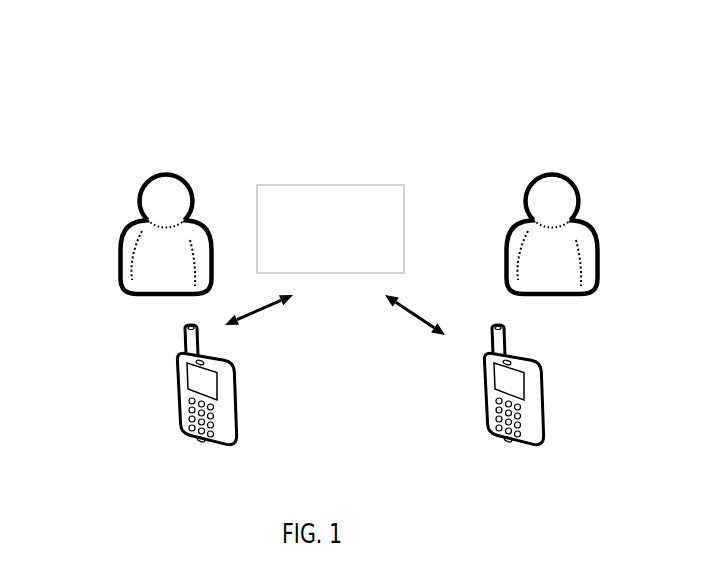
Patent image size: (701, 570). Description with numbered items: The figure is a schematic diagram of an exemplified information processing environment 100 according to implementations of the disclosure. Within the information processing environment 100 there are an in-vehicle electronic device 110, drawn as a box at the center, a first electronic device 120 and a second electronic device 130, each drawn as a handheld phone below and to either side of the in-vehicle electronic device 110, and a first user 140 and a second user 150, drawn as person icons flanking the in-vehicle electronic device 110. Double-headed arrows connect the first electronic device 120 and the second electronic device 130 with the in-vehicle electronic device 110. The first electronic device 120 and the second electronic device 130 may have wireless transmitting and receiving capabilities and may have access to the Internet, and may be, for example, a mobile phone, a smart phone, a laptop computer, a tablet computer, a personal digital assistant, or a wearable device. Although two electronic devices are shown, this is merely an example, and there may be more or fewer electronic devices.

The information processing environment 100 is at (203, 45).
The in-vehicle electronic device 110 is at (330, 185).
The first electronic device 120 is at (179, 400).
The second electronic device 130 is at (486, 402).
The first user 140 is at (134, 223).
The second user 150 is at (524, 221).